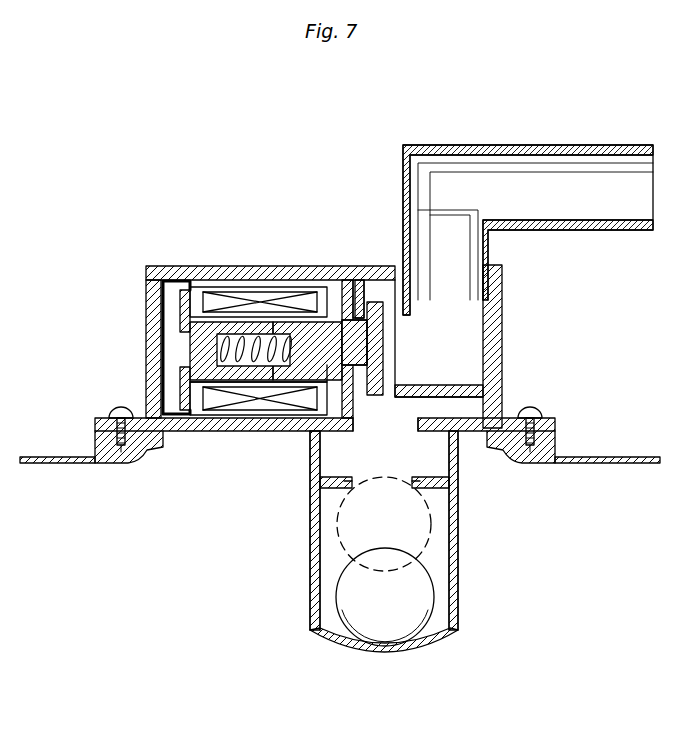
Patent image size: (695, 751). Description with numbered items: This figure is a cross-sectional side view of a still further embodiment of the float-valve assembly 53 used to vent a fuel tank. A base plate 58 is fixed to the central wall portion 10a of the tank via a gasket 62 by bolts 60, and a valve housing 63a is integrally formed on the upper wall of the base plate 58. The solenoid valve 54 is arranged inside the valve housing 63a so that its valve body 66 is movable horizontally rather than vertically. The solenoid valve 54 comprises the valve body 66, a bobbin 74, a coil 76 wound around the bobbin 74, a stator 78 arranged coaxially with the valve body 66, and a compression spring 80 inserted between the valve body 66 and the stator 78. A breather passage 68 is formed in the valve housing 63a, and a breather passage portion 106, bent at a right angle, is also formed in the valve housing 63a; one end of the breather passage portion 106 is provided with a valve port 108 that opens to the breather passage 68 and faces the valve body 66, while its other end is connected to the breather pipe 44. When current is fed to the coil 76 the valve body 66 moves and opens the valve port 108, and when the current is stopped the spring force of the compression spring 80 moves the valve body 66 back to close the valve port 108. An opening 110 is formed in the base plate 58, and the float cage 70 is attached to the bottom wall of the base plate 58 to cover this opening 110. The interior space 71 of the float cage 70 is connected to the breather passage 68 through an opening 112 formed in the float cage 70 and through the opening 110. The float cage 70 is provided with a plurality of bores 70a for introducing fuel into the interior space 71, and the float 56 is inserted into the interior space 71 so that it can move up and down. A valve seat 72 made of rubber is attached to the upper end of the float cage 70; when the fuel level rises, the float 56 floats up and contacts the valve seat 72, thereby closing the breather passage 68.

The central wall portion 10a is at (46, 463).
The breather pipe 44 is at (403, 162).
The float-valve assembly 53 is at (311, 238).
The solenoid valve 54 is at (180, 280).
The float 56 is at (405, 608).
The base plate 58 is at (182, 425).
The bolts 60 is at (112, 407).
The gasket 62 is at (107, 433).
The valve housing 63a is at (158, 300).
The valve body 66 is at (307, 363).
The breather passage 68 is at (362, 277).
The float cage 70 is at (455, 637).
The bores 70a is at (317, 542).
The interior space 71 is at (330, 623).
The valve seat 72 is at (458, 510).
The bobbin 74 is at (248, 395).
The coil 76 is at (213, 403).
The stator 78 is at (192, 352).
The compression spring 80 is at (238, 345).
The breather passage portion 106 is at (468, 334).
The valve port 108 is at (364, 292).
The opening 110 is at (373, 420).
The opening 112 is at (380, 480).